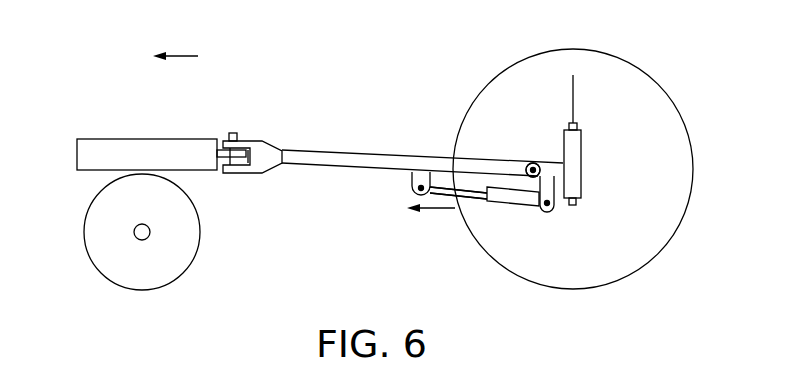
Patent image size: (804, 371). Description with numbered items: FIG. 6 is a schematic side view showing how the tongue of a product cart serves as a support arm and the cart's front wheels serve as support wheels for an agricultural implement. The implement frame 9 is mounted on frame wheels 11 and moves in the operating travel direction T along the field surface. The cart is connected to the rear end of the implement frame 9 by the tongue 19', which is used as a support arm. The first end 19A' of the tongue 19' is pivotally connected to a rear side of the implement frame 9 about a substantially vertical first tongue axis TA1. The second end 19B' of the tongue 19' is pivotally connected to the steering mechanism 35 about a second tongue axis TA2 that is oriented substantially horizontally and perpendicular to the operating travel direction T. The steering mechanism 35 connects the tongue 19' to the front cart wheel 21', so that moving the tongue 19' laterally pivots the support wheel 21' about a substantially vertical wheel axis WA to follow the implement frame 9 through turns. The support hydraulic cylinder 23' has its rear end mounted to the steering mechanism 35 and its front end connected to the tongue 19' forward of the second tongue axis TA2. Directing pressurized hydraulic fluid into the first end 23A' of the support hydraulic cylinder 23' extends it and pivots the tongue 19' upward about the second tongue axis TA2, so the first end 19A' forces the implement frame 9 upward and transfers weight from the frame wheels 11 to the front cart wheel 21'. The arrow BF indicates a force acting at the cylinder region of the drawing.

The implement frame 9 is at (147, 139).
The frame wheels 11 is at (192, 268).
The tongue 19' is at (422, 145).
The first end of tongue 19A' is at (276, 138).
The second end of tongue 19B' is at (481, 121).
The first tongue axis TA1 is at (233, 131).
The second tongue axis TA2 is at (536, 163).
The wheel axis WA is at (573, 93).
The support wheel 21' is at (598, 169).
The support hydraulic cylinder 23' is at (475, 224).
The first end of support hydraulic cylinder 23A' is at (495, 258).
The steering mechanism 35 is at (563, 205).
The operating travel direction T is at (166, 56).
The braking force BF is at (431, 223).